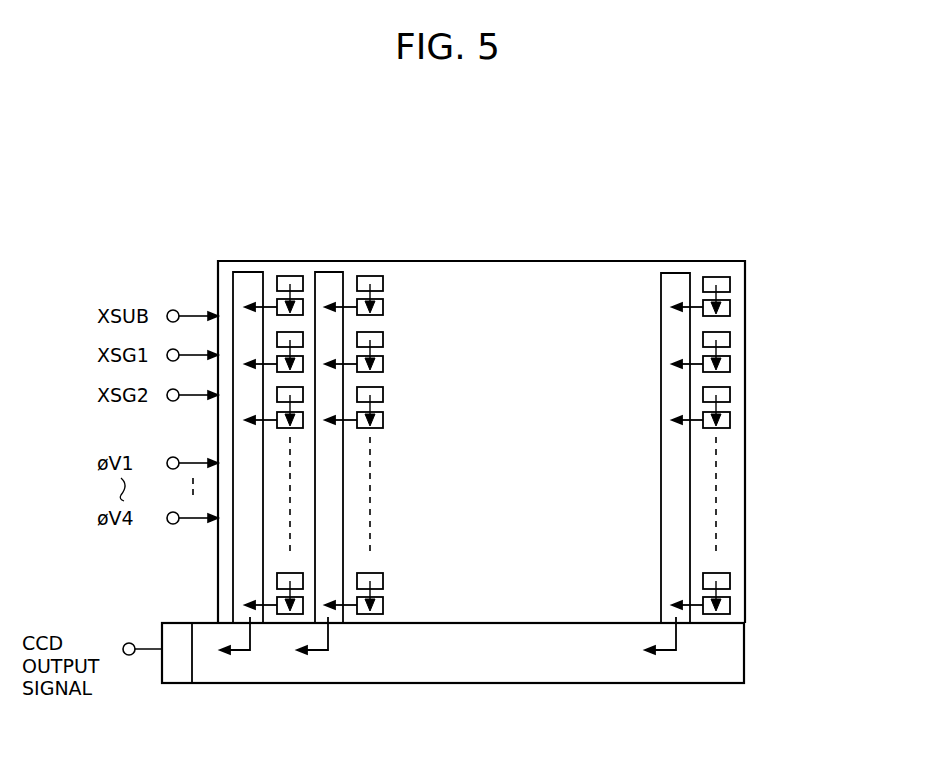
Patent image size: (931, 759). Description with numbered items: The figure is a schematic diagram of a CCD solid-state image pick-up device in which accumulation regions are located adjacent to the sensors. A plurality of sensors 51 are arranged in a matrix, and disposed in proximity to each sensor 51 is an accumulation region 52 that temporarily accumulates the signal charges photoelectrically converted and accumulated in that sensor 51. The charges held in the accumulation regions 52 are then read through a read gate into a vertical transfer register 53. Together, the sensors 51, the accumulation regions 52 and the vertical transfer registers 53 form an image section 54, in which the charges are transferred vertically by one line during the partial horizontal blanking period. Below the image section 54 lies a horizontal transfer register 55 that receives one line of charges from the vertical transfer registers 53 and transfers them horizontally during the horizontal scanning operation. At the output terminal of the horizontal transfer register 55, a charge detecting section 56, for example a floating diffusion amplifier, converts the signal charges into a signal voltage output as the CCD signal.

The sensor 51 is at (293, 278).
The accumulation region 52 is at (387, 306).
The vertical transfer register 53 is at (661, 297).
The image section 54 is at (462, 476).
The horizontal transfer register 55 is at (732, 656).
The charge detecting section 56 is at (181, 631).